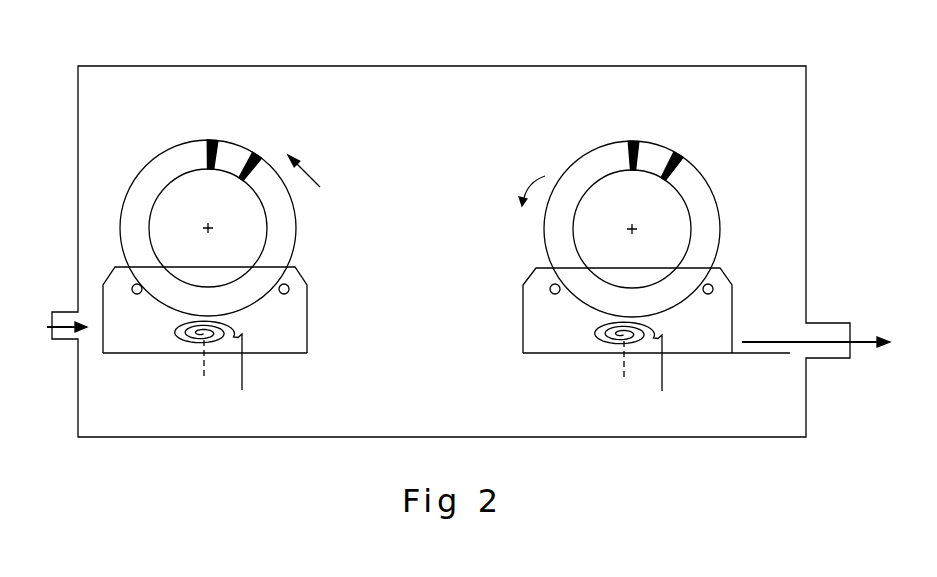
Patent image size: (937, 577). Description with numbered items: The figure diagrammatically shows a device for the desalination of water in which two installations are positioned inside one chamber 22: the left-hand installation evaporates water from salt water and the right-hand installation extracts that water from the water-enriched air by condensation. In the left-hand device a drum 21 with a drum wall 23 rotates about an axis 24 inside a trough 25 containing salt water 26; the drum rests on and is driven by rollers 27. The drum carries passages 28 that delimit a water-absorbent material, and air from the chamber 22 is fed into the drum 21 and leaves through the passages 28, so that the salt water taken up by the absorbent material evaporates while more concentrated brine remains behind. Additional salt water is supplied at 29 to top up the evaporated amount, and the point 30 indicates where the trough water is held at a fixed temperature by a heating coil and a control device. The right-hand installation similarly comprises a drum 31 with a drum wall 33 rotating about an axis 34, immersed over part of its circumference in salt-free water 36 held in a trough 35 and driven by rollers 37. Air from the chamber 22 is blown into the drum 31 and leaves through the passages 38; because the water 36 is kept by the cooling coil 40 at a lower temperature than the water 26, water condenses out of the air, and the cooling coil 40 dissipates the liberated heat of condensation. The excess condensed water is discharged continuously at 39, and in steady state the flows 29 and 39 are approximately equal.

The drum 21 is at (192, 197).
The chamber 22 is at (373, 65).
The drum wall 23 is at (278, 227).
The axis 24 is at (204, 228).
The trough 25 is at (308, 328).
The salt water 26 is at (128, 337).
The rollers 27 is at (132, 290).
The passages 28 is at (212, 138).
The salt water supply 29 is at (51, 327).
The heating point 30 is at (208, 355).
The drum 31 is at (605, 190).
The drum wall 33 is at (707, 243).
The axis 34 is at (628, 228).
The trough 35 is at (523, 327).
The salt-free water 36 is at (698, 343).
The rollers 37 is at (715, 289).
The passages 38 is at (636, 138).
The salt-free water discharge 39 is at (816, 331).
The cooling coil 40 is at (628, 356).